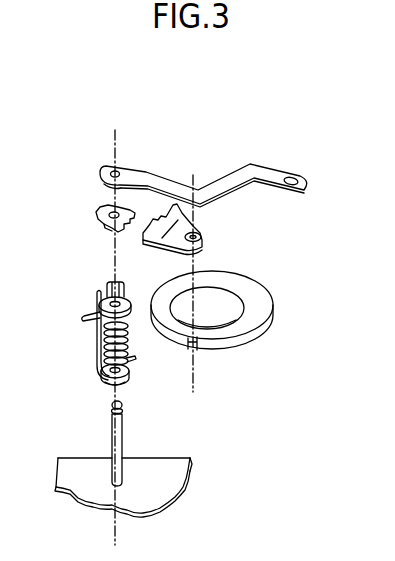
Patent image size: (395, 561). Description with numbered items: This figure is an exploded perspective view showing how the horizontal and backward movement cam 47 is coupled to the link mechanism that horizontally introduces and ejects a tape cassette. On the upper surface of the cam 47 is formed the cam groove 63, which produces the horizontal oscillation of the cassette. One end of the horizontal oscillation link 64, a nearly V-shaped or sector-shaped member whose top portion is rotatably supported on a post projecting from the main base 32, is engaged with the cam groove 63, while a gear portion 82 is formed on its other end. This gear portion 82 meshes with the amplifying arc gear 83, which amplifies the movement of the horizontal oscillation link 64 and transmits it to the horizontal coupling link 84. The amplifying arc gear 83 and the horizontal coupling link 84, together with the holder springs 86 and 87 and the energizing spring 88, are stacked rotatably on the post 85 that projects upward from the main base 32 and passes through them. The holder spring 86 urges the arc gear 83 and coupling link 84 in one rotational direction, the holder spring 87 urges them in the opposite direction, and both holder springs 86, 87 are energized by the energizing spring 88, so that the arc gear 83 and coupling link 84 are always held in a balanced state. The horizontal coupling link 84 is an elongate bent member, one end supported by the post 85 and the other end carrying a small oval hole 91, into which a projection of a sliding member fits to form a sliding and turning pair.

The main base 32 is at (163, 490).
The horizontal and backward movement cam 47 is at (242, 286).
The cam groove 63 is at (233, 323).
The horizontal oscillation link 64 is at (197, 228).
The gear portion 82 is at (143, 234).
The amplifying arc gear 83 is at (100, 208).
The horizontal coupling link 84 is at (247, 165).
The post 85 is at (122, 430).
The holder spring 86 is at (105, 283).
The holder spring 87 is at (97, 300).
The energizing spring 88 is at (98, 340).
The small oval hole 91 is at (302, 172).